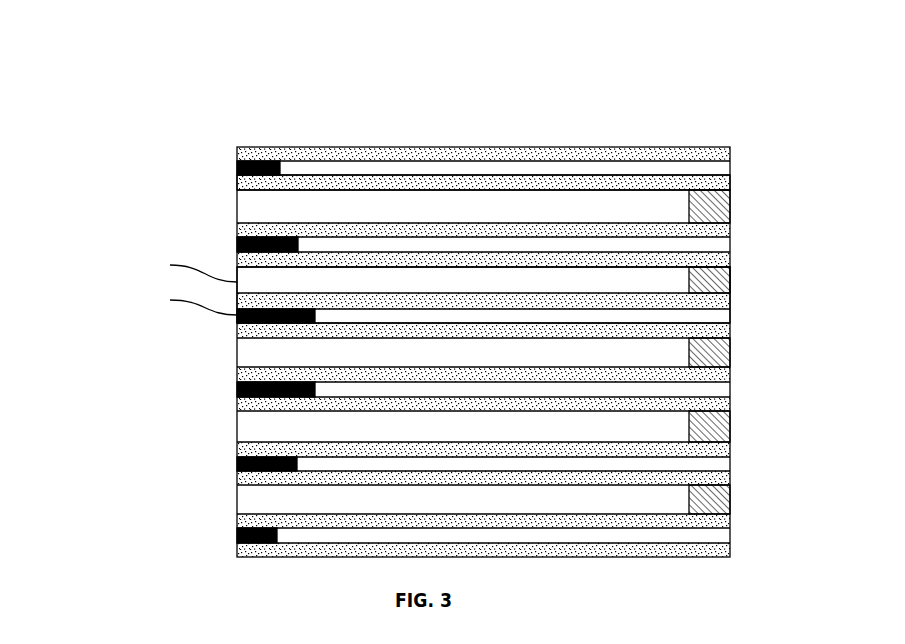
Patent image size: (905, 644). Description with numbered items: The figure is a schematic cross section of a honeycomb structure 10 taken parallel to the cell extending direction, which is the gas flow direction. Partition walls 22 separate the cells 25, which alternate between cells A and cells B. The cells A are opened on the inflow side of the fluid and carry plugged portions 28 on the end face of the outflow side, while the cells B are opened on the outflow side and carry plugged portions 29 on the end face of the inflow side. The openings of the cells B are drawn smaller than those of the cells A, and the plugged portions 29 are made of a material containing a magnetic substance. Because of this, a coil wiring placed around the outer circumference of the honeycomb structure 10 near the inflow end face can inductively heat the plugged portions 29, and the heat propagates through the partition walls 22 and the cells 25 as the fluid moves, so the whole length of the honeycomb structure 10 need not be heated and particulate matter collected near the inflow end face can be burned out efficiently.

The honeycomb structure 10 is at (424, 288).
The partition walls 22 is at (572, 183).
The cells 25 is at (82, 257).
The plugged portions 28 is at (732, 207).
The plugged portions 29 is at (237, 243).